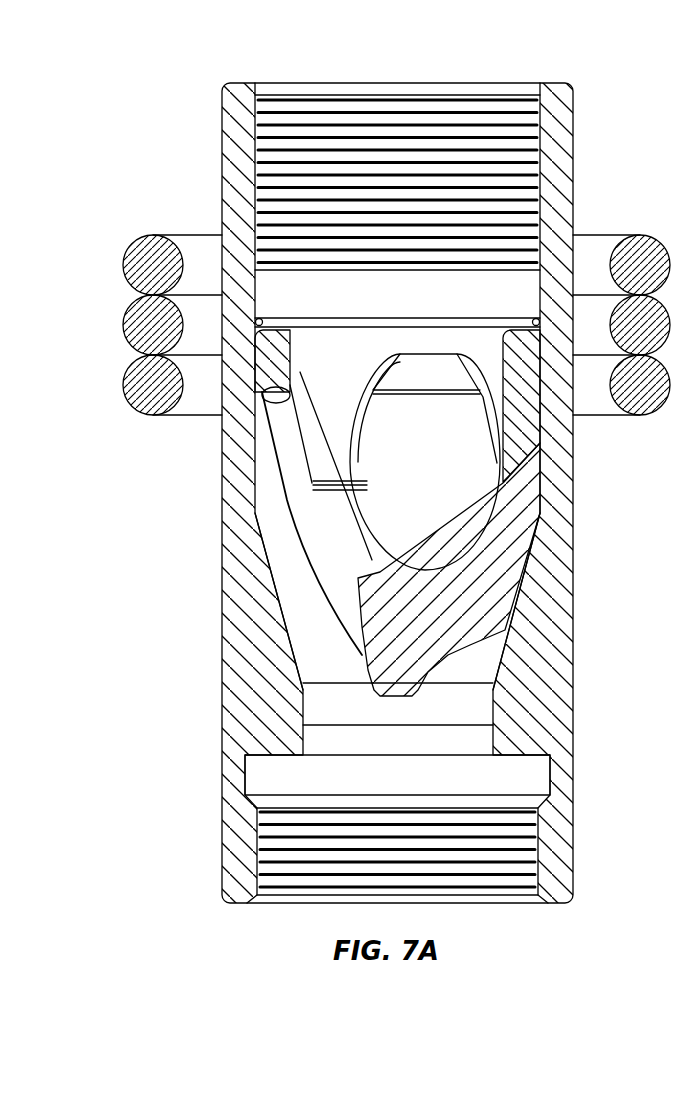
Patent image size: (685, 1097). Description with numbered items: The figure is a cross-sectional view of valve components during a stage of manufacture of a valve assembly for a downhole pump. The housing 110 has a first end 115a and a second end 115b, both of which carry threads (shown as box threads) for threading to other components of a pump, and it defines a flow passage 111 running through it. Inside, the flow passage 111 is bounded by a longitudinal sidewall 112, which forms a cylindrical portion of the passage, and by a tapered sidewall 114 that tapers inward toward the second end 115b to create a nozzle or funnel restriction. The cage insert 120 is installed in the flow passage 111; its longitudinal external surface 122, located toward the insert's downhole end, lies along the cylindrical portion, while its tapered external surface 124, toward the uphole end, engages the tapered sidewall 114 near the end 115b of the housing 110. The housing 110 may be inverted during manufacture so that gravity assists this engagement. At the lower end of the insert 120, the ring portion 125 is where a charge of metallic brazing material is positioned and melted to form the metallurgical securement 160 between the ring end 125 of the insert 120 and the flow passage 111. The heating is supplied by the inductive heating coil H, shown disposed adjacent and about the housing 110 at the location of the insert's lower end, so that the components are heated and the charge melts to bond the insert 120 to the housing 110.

The housing 110 is at (222, 132).
The flow passage 111 is at (372, 120).
The first end 115a is at (265, 203).
The second end 115b is at (262, 847).
The inductive heating coil H is at (128, 263).
The ring portion 125 is at (403, 318).
The metallurgical securement 160 is at (455, 318).
The longitudinal external surface 122 is at (540, 455).
The tapered external surface 124 is at (523, 582).
The cage insert 120 is at (542, 515).
The longitudinal sidewall 112 is at (258, 464).
The tapered sidewall 114 is at (300, 626).